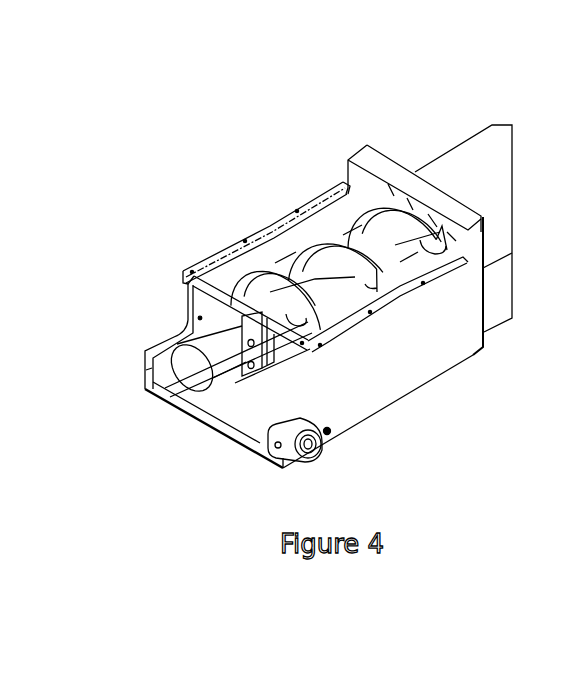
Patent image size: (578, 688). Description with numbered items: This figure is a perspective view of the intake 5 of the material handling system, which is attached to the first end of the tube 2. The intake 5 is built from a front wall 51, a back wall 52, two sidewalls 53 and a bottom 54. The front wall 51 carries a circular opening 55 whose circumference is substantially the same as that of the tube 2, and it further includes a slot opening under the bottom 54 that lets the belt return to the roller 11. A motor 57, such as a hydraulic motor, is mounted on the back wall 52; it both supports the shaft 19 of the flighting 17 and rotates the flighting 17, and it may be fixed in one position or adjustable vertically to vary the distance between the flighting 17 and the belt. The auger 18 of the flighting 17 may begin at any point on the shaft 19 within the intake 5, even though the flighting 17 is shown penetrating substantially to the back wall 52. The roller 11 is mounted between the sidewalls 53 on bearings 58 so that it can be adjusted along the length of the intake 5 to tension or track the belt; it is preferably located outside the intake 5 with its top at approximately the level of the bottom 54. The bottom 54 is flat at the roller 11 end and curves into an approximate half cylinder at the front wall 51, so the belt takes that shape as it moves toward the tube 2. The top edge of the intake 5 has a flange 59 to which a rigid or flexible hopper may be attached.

The intake 5 is at (288, 165).
The tube 2 is at (463, 152).
The roller 11 is at (230, 408).
The flighting 17 is at (348, 327).
The auger 18 is at (263, 297).
The shaft 19 is at (402, 277).
The front wall 51 is at (367, 170).
The back wall 52 is at (293, 360).
The sidewalls 53 is at (287, 232).
The bottom 54 is at (278, 275).
The circular opening 55 is at (385, 182).
The motor 57 is at (193, 365).
The bearings 58 is at (297, 458).
The flange 59 is at (425, 270).